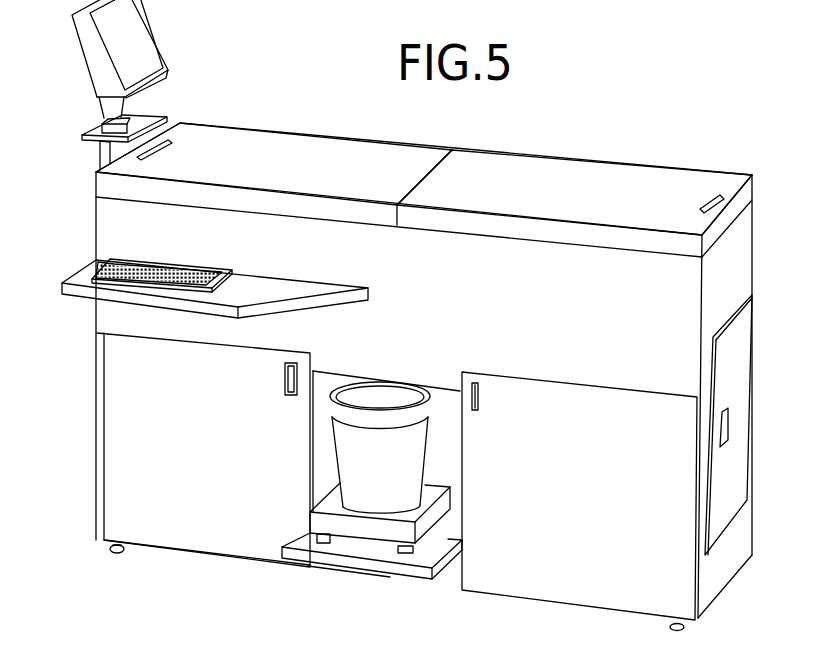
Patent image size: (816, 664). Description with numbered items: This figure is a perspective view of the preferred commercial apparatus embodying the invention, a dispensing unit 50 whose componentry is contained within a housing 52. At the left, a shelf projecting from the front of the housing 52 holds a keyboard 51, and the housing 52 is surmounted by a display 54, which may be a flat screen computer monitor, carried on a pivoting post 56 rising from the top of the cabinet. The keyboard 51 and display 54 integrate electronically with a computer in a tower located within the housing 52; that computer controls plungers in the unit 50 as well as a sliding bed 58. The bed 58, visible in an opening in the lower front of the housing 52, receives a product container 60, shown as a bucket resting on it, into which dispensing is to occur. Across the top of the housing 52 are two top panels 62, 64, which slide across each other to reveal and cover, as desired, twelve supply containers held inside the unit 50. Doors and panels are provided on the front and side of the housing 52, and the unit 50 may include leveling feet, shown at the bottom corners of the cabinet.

The dispensing unit 50 is at (64, 321).
The keyboard 51 is at (133, 258).
The housing 52 is at (127, 433).
The display 54 is at (147, 52).
The pivoting post 56 is at (100, 154).
The sliding bed 58 is at (367, 550).
The product container 60 is at (363, 435).
The top panel 62 is at (297, 146).
The top panel 64 is at (543, 165).